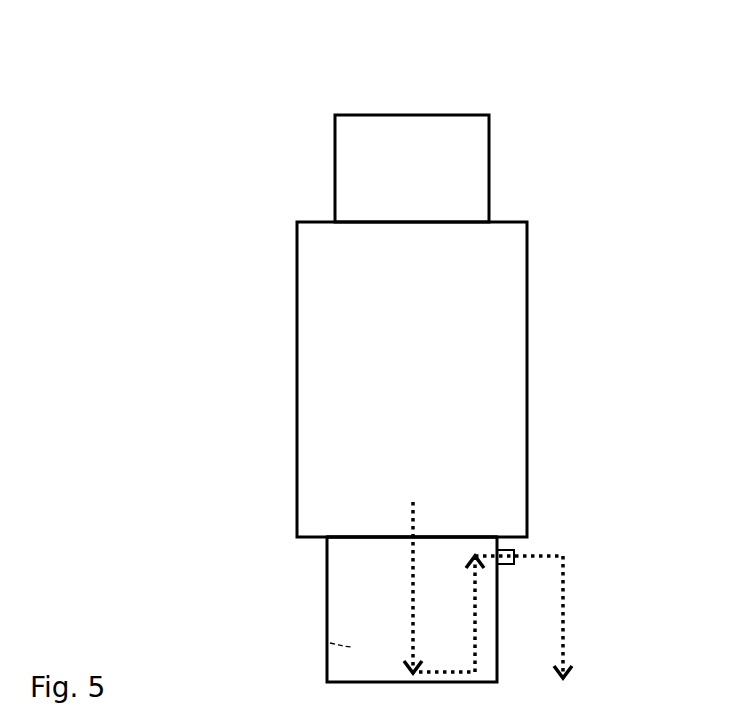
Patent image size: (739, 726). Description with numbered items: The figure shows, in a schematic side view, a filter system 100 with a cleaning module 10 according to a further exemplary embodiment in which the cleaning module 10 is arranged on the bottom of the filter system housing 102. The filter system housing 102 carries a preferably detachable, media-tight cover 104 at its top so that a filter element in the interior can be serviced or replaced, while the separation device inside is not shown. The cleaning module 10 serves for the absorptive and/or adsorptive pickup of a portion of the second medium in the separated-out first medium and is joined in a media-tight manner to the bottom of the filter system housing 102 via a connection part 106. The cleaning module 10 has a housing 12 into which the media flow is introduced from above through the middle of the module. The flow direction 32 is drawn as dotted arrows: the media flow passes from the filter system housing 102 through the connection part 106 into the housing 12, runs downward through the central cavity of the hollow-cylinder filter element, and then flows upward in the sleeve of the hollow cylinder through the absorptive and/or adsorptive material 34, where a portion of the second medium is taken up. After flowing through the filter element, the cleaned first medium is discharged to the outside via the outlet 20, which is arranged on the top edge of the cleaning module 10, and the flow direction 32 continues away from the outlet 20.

The filter system 100 is at (555, 120).
The cover 104 is at (490, 160).
The filter system housing 102 is at (528, 380).
The connection part 106 is at (326, 538).
The cleaning module 10 is at (328, 609).
The housing 12 is at (327, 667).
The absorptive and/or adsorptive material 34 is at (330, 643).
The outlet 20 is at (512, 550).
The flow direction 32 is at (413, 603).